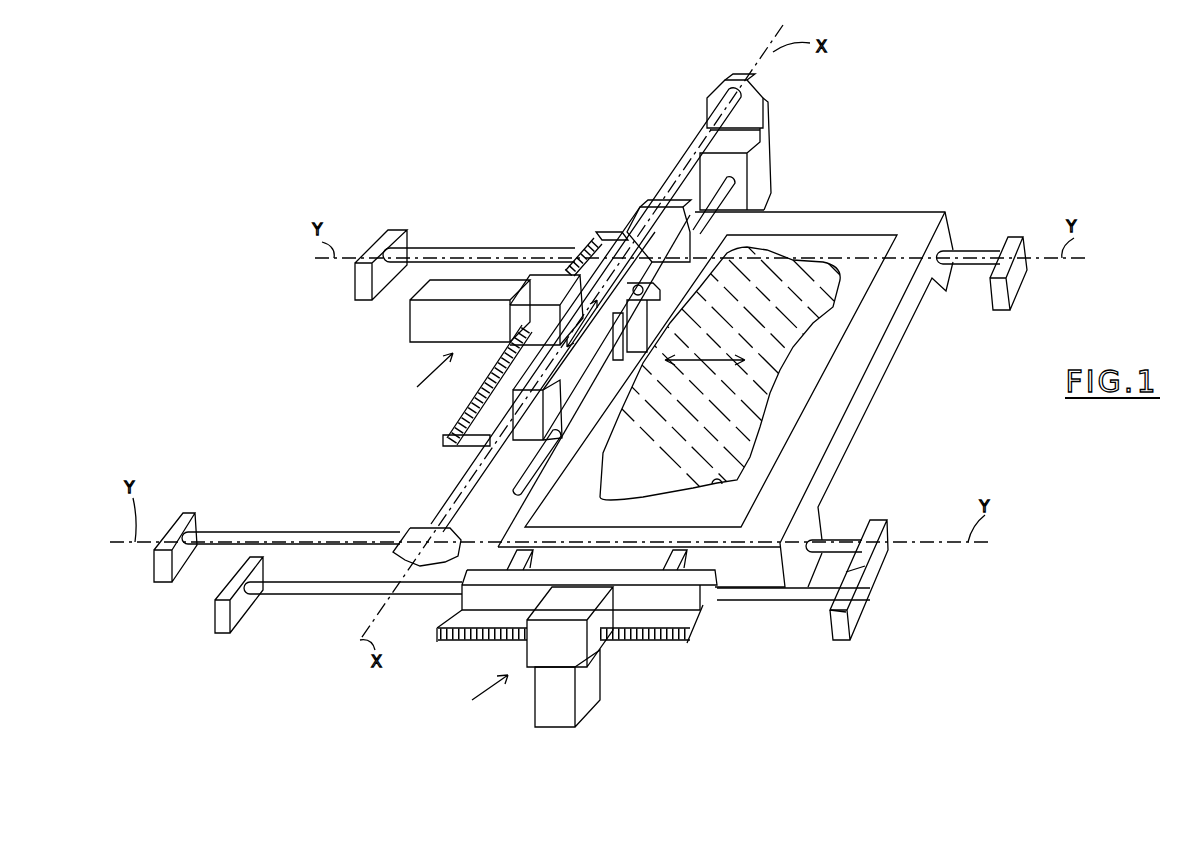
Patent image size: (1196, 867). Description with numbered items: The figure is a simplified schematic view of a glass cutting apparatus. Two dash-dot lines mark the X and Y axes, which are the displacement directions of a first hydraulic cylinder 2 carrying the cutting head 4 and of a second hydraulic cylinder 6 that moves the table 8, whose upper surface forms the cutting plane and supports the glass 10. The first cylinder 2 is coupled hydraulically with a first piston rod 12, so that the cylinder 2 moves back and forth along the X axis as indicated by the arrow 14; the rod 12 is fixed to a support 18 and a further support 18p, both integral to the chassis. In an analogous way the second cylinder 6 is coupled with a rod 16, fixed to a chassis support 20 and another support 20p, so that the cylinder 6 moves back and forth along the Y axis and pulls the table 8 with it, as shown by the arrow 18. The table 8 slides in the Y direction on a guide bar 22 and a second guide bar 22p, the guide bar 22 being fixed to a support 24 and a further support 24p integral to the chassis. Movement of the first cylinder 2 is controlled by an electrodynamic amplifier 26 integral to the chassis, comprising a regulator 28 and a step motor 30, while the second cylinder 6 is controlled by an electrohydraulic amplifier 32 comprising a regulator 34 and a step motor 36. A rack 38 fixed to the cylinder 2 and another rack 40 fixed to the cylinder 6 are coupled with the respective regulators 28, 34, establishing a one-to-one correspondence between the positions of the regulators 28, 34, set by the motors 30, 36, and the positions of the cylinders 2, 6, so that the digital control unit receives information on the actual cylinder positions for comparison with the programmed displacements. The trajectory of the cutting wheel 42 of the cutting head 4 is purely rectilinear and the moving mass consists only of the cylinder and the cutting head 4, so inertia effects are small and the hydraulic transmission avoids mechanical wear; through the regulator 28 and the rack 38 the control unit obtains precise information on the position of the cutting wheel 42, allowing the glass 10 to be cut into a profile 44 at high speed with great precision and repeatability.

The first hydraulic cylinder 2 is at (637, 207).
The cutting head 4 is at (647, 232).
The second hydraulic cylinder 6 is at (687, 598).
The table 8 is at (920, 212).
The glass 10 is at (832, 240).
The first piston rod 12 is at (460, 487).
The arrow 14 is at (565, 255).
The rod 16 is at (325, 598).
The support / arrow 18 is at (723, 353).
The support 18p is at (392, 550).
The support 20 is at (222, 620).
The support 20p is at (862, 602).
The guide bar 22 is at (262, 533).
The guide bar 22p is at (425, 250).
The support 24 is at (1020, 282).
The support 24p is at (357, 290).
The electrodynamic amplifier 26 is at (423, 381).
The regulator 28 is at (523, 283).
The step motor 30 is at (422, 327).
The electrohydraulic amplifier 32 is at (482, 703).
The regulator 34 is at (600, 625).
The step motor 36 is at (598, 690).
The rack 38 is at (447, 437).
The rack 40 is at (462, 645).
The cutting wheel 42 is at (603, 420).
The profile 44 is at (716, 488).